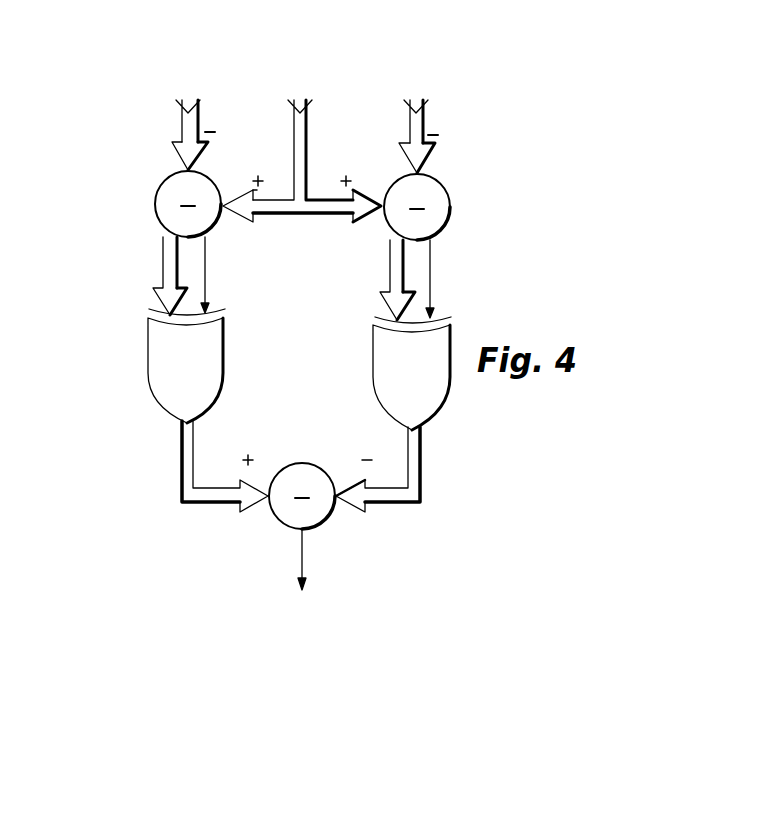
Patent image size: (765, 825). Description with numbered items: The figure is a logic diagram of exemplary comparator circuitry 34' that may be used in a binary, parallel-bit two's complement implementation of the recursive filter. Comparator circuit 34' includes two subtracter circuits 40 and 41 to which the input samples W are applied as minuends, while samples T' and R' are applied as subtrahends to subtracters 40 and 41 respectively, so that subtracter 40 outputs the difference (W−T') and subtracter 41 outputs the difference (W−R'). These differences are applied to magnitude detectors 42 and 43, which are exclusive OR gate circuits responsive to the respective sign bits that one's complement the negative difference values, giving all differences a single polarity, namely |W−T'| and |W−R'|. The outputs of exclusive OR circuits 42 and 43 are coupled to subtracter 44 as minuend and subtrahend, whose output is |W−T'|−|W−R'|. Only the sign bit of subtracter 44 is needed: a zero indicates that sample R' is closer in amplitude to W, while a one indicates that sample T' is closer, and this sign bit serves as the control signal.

The comparator circuitry 34' is at (288, 337).
The subtracter circuit 40 is at (162, 184).
The subtracter circuit 41 is at (447, 194).
The magnitude detector 42 is at (151, 382).
The magnitude detector 43 is at (452, 332).
The subtracter 44 is at (281, 522).